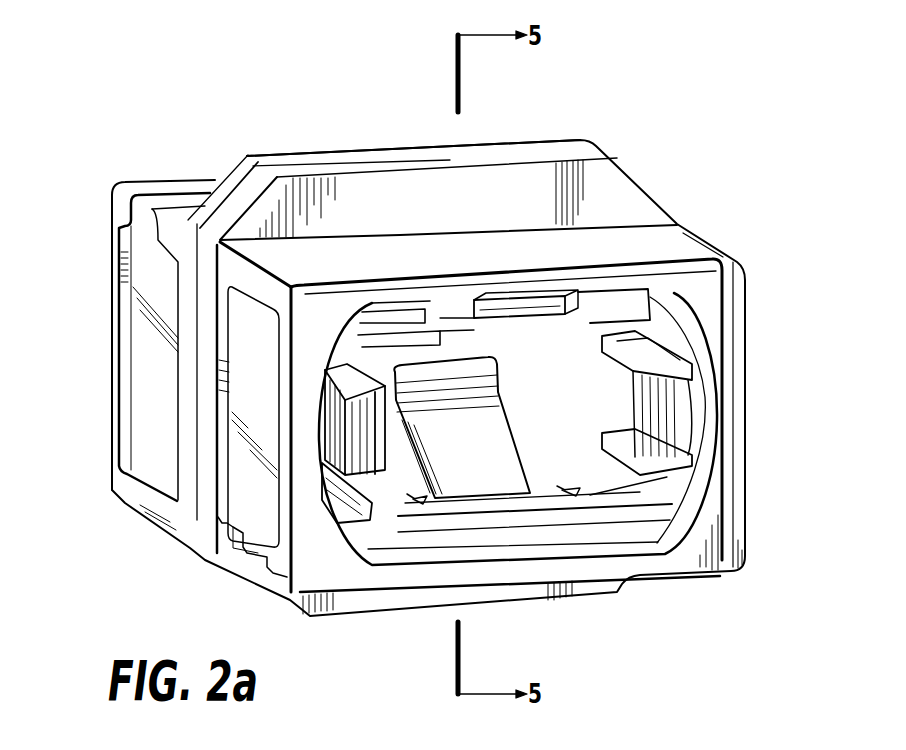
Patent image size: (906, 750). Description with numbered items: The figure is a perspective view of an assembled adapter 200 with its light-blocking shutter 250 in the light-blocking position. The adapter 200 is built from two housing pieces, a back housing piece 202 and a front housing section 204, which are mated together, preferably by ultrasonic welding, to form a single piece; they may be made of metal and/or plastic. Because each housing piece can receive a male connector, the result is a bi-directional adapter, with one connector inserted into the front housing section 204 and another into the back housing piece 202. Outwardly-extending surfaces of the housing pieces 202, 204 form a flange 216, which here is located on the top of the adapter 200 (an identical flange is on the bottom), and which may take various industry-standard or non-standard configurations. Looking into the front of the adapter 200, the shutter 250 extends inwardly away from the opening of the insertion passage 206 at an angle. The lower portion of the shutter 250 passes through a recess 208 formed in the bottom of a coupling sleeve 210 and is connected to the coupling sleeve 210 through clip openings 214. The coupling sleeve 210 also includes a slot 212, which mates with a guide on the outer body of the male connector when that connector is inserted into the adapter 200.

The adapter 200 is at (140, 118).
The back housing piece 202 is at (112, 330).
The front housing section 204 is at (205, 388).
The insertion passage 206 is at (312, 473).
The recess 208 is at (403, 490).
The coupling sleeve 210 is at (497, 510).
The slot 212 is at (477, 313).
The clip openings 214 is at (415, 500).
The flange 216 is at (540, 146).
The shutter 250 is at (492, 475).